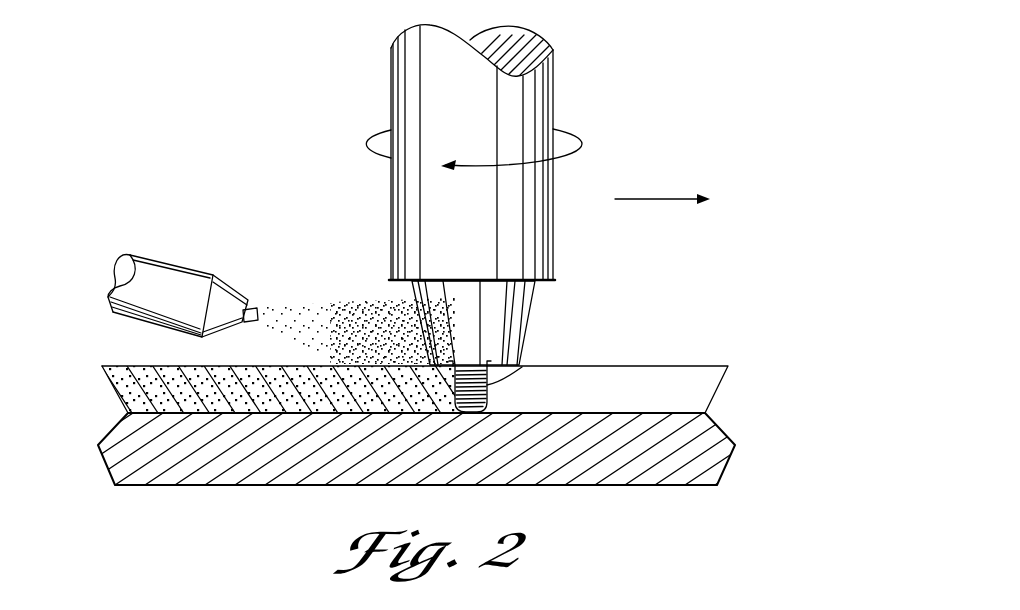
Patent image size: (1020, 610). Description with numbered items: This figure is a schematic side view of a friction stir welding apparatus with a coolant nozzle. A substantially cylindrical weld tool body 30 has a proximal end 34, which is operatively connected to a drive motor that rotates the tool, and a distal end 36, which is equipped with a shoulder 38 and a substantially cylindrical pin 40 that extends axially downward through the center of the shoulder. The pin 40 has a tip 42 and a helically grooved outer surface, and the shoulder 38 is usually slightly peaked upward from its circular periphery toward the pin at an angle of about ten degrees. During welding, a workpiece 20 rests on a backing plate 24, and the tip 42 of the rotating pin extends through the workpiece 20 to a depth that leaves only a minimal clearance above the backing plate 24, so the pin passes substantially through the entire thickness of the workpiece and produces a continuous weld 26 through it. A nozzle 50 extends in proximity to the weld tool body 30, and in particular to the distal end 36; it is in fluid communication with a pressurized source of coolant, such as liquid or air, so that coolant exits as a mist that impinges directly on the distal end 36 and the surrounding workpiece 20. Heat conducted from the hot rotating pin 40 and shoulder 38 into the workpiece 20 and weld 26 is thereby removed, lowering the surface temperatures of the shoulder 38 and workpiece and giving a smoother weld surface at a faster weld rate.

The workpiece 20 is at (692, 367).
The backing plate 24 is at (735, 445).
The weld 26 is at (168, 366).
The weld tool body 30 is at (566, 182).
The proximal end 34 is at (573, 47).
The distal end 36 is at (600, 346).
The shoulder 38 is at (530, 317).
The pin 40 is at (522, 367).
The tip 42 is at (490, 411).
The nozzle 50 is at (173, 261).